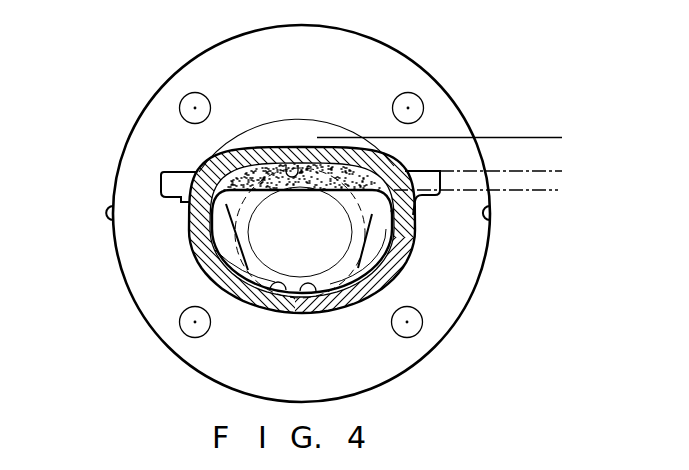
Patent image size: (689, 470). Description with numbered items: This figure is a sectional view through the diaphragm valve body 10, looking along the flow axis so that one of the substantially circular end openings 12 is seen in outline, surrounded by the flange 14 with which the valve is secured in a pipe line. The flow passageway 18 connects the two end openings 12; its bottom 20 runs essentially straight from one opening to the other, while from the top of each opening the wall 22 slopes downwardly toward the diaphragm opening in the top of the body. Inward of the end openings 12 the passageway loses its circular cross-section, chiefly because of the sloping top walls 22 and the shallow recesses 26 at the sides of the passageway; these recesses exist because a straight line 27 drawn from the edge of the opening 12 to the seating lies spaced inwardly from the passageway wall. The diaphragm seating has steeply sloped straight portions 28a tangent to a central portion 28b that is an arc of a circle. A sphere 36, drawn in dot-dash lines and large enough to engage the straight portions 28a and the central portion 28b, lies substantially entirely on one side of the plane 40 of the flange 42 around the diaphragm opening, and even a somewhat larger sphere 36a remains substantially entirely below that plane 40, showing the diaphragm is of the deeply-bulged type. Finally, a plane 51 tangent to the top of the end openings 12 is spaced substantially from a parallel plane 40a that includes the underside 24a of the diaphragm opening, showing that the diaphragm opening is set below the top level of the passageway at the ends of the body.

The valve body 10 is at (411, 290).
The end openings 12 is at (233, 273).
The flanges 14 is at (140, 117).
The flow passageway 18 is at (207, 236).
The bottom of the passageway 20 is at (309, 292).
The wall of the passageway 22 is at (292, 164).
The underside of the diaphragm opening 24a is at (192, 210).
The shallow recesses 26 is at (216, 250).
The straight line 27 is at (372, 193).
The straight portions of the diaphragm seating 28a is at (348, 236).
The central portion of the seating 28b is at (266, 292).
The sphere 36 is at (397, 170).
The larger sphere 36a is at (318, 135).
The plane of the flange 40 is at (536, 170).
The plane including the underside of the diaphragm opening 40a is at (547, 188).
The flange 42 is at (488, 199).
The plane tangent to the top of the end openings 51 is at (520, 136).